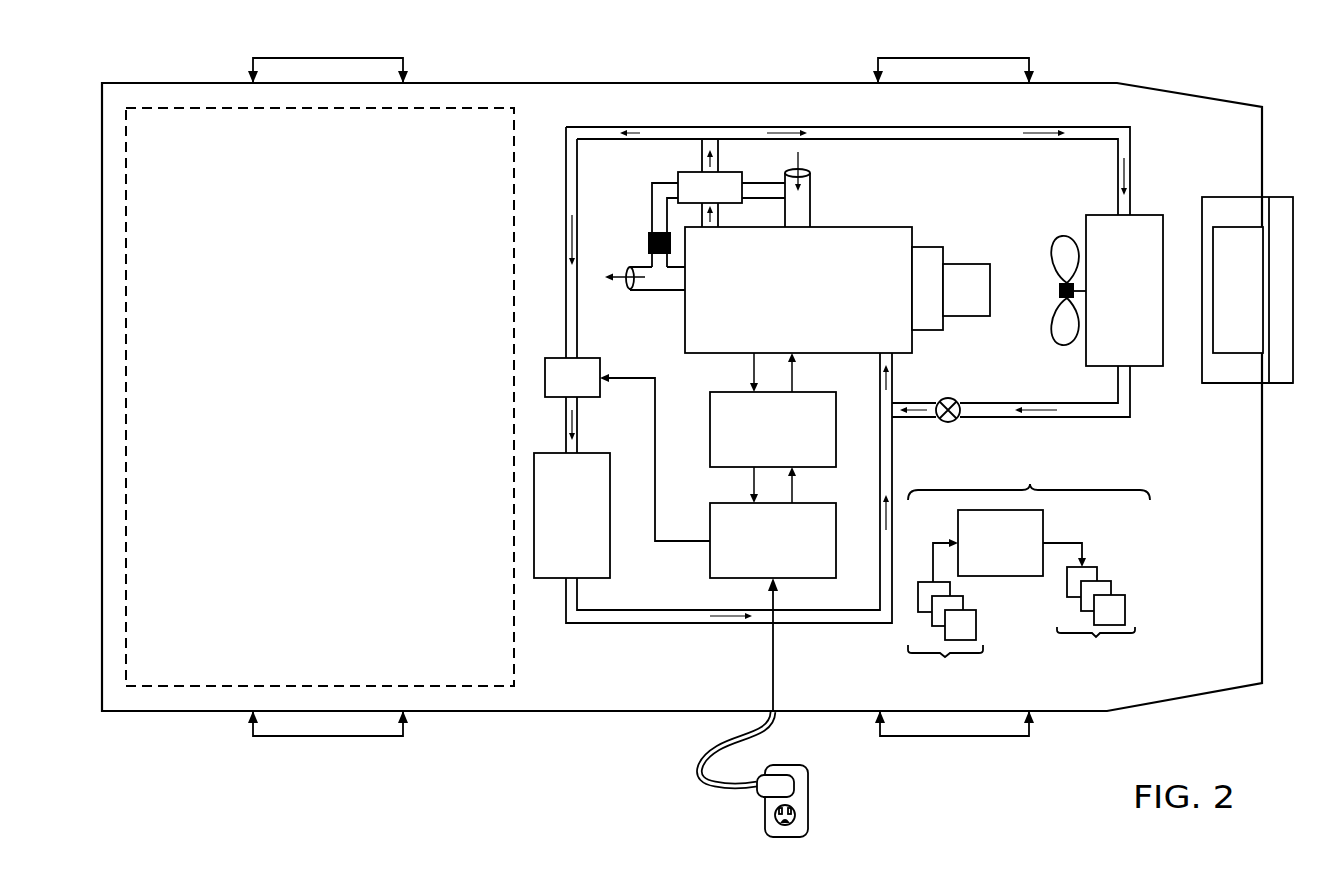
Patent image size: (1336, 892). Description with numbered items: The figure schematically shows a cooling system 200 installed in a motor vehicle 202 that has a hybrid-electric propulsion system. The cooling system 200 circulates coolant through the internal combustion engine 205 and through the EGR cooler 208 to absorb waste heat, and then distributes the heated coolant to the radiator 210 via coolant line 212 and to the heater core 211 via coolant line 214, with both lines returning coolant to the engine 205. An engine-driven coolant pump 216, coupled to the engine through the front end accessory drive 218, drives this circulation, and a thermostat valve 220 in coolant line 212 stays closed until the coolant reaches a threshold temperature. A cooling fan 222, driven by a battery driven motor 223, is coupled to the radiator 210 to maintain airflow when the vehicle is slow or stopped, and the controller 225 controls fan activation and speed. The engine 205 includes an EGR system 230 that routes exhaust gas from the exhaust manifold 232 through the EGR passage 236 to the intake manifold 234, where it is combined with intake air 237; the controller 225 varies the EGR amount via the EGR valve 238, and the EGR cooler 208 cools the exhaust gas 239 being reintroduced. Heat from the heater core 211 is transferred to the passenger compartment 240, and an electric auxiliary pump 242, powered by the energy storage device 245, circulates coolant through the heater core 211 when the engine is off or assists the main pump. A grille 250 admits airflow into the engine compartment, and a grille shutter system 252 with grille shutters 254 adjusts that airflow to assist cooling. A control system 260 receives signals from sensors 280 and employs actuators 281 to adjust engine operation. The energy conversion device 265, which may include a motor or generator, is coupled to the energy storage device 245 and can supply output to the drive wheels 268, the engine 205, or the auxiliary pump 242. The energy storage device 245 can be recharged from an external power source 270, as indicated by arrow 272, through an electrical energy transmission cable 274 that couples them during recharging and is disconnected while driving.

The cooling system 200 is at (871, 376).
The motor vehicle 202 is at (578, 82).
The internal combustion engine 205 is at (782, 317).
The EGR cooler 208 is at (694, 198).
The radiator 210 is at (1108, 301).
The heater core 211 is at (556, 526).
The coolant line 212 is at (958, 127).
The coolant line 214 is at (641, 127).
The engine-driven coolant pump 216 is at (950, 300).
The front end accessory drive 218 is at (942, 246).
The thermostat valve 220 is at (954, 399).
The cooling fan 222 is at (1055, 260).
The battery driven motor 223 is at (1058, 297).
The controller 225 is at (984, 553).
The EGR system 230 is at (636, 186).
The exhaust manifold 232 is at (665, 291).
The intake manifold 234 is at (812, 212).
The EGR passage 236 is at (748, 181).
The intake air 237 is at (803, 158).
The EGR valve 238 is at (650, 242).
The exhaust gas 239 is at (628, 285).
The passenger compartment 240 is at (290, 438).
The electric auxiliary pump 242 is at (556, 388).
The energy storage device 245 is at (757, 551).
The grille 250 is at (1275, 197).
The grille shutter system 252 is at (1237, 384).
The grille shutters 254 is at (1222, 301).
The control system 260 is at (1026, 571).
The energy conversion device 265 is at (757, 440).
The drive wheels 268 is at (329, 57).
The power source 270 is at (765, 820).
The arrow 272 is at (770, 650).
The electrical energy transmission cable 274 is at (697, 762).
The sensors 280 is at (945, 620).
The actuators 281 is at (1095, 613).